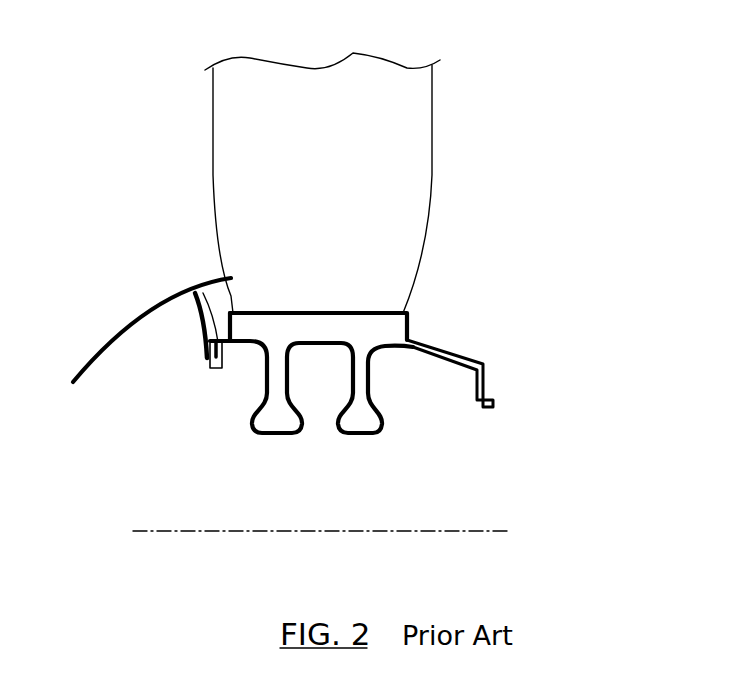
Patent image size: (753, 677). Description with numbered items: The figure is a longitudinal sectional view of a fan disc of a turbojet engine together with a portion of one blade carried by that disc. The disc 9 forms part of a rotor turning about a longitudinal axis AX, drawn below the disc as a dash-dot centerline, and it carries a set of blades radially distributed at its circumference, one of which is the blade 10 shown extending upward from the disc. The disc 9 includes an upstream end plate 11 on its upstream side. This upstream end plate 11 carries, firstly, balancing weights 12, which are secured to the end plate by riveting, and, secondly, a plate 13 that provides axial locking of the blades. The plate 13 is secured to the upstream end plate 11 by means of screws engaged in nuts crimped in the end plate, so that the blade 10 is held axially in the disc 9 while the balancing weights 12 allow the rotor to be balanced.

The disc 9 is at (272, 412).
The blade 10 is at (322, 183).
The upstream end plate 11 is at (195, 292).
The balancing weights 12 is at (217, 369).
The plate 13 is at (148, 320).
The longitudinal axis AX is at (165, 532).